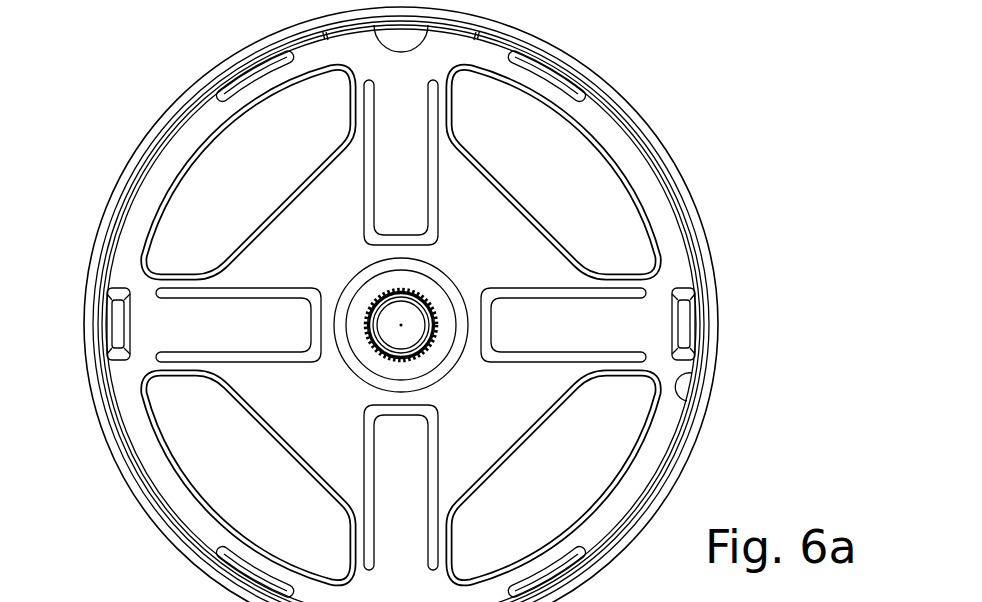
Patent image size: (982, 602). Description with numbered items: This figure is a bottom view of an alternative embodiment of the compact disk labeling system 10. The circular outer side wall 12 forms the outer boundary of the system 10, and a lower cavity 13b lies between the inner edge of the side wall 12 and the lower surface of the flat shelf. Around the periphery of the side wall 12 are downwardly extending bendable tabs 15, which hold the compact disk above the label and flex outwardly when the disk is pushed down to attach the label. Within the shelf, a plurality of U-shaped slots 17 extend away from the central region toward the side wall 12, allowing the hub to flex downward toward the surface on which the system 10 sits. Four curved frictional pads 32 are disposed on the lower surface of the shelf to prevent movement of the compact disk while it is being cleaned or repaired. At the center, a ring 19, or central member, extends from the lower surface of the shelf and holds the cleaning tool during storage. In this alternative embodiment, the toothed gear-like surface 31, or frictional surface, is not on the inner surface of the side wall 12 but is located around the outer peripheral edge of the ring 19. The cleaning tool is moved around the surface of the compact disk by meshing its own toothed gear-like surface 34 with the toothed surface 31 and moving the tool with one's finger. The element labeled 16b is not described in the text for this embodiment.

The compact disk labeling system 10 is at (734, 107).
The circular outer side wall 12 is at (180, 103).
The lower cavity 13b is at (508, 212).
The tabs 15 is at (683, 398).
The hub 16b is at (443, 367).
The U-shaped slots 17 is at (538, 288).
The ring 19 is at (372, 340).
The toothed gear-like surface 31 is at (168, 148).
The frictional pads 32 is at (230, 178).
The toothed gear-like surface of the cleaning tool 34 is at (433, 308).